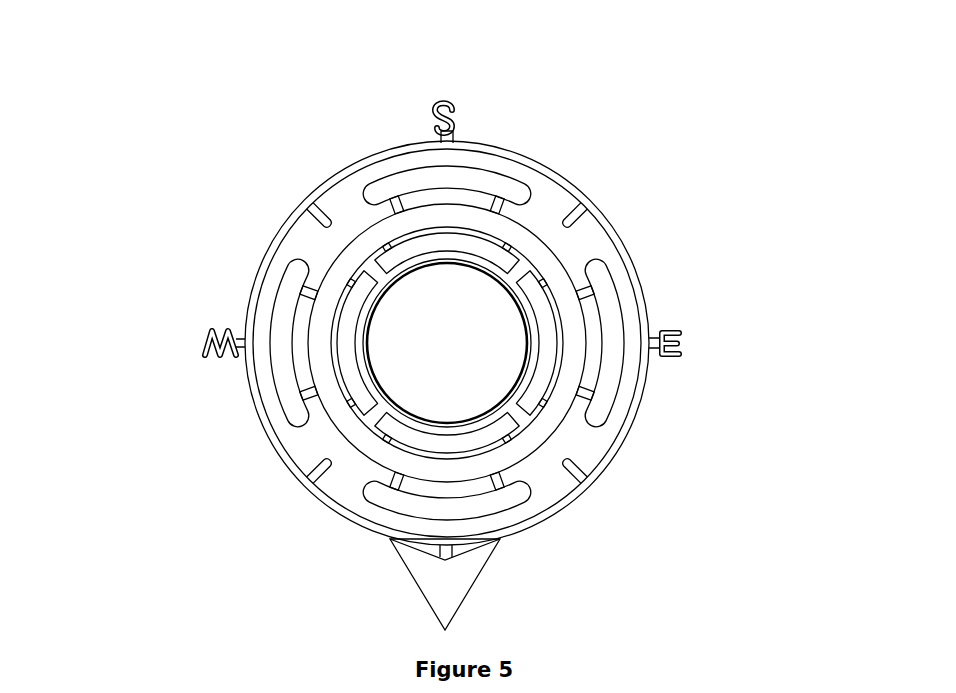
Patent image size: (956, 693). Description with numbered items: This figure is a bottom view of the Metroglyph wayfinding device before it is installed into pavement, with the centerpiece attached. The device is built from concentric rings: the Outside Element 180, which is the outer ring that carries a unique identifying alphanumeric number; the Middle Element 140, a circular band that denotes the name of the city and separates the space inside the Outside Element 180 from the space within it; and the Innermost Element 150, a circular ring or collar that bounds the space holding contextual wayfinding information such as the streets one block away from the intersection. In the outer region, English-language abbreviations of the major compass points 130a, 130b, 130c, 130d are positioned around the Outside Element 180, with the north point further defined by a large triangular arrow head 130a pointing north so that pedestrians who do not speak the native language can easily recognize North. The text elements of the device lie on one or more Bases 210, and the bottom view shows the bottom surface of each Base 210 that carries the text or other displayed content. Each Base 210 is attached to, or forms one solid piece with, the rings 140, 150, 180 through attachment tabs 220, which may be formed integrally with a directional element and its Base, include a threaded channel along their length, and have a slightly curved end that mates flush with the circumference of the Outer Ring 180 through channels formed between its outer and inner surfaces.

The Outside Element 180 is at (515, 153).
The Middle Element 140 is at (542, 250).
The Innermost Element 150 is at (525, 323).
The Base 210 is at (390, 183).
The attachment tab 220 is at (390, 202).
The large triangular arrow head 130a is at (453, 585).
The compass point abbreviation 130b is at (684, 343).
The compass point abbreviation 130c is at (455, 103).
The compass point abbreviation 130d is at (203, 343).